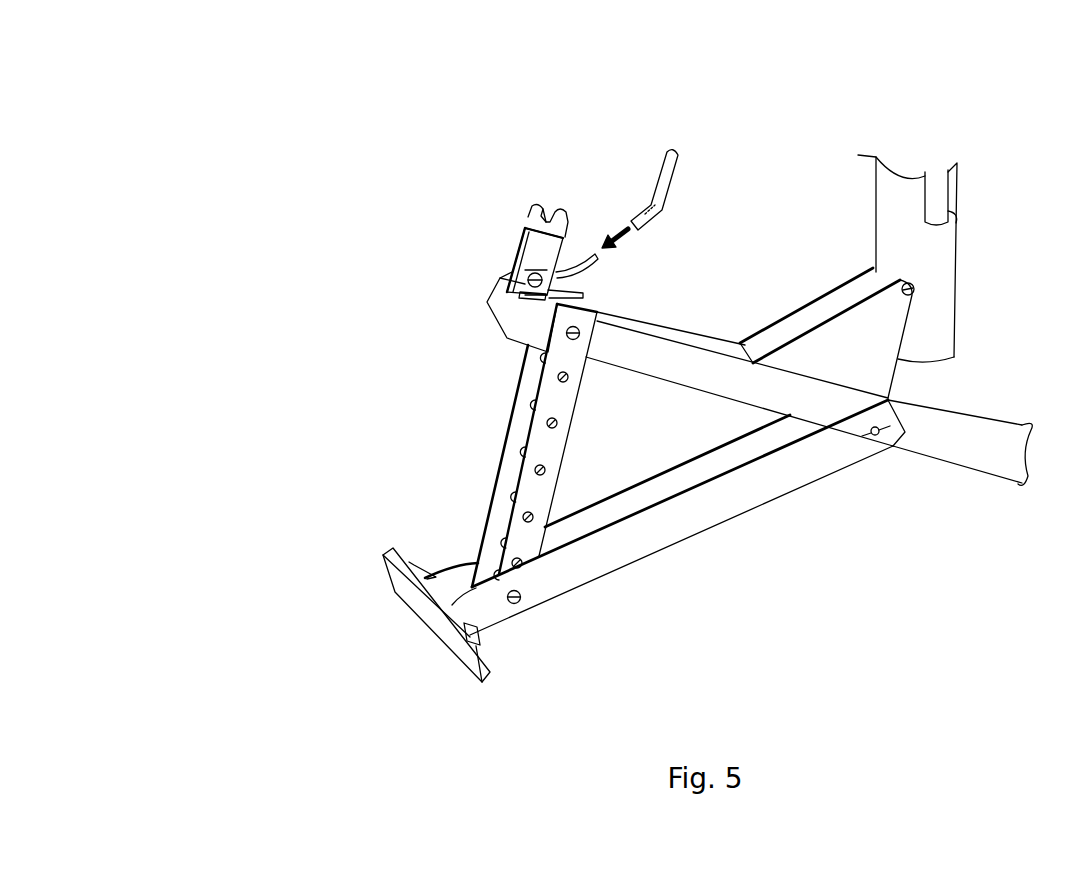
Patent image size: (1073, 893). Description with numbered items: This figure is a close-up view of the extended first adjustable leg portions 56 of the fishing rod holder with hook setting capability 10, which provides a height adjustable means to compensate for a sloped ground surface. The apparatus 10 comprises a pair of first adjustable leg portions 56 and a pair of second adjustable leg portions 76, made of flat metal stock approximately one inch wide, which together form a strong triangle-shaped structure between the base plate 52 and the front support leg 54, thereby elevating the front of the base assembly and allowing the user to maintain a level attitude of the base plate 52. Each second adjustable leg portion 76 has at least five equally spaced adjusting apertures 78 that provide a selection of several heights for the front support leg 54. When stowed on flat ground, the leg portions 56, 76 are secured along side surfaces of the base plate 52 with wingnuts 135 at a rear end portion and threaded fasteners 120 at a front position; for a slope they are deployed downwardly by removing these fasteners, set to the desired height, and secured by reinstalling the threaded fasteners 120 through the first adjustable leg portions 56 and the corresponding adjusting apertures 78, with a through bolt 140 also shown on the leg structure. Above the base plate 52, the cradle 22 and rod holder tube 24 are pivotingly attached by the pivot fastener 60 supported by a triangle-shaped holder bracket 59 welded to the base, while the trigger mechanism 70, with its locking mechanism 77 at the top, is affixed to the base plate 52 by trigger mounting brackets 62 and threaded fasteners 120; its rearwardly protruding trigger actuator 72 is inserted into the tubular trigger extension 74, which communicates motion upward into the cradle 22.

The fishing rod holder with hook setting capability 10 is at (265, 122).
The cradle 22 is at (903, 229).
The rod holder tube 24 is at (940, 190).
The base plate 52 is at (495, 319).
The front support leg 54 is at (437, 603).
The first adjustable leg portion 56 is at (663, 502).
The holder bracket 59 is at (818, 338).
The pivot fastener 60 is at (909, 296).
The trigger mounting bracket 62 is at (520, 296).
The trigger mechanism 70 is at (520, 240).
The trigger actuator 72 is at (582, 256).
The trigger extension 74 is at (661, 191).
The second adjustable leg portion 76 is at (585, 296).
The locking mechanism 77 is at (537, 207).
The adjusting aperture 78 is at (558, 379).
The threaded fastener 120 is at (530, 278).
The wingnut 135 is at (875, 438).
The through bolt 140 is at (578, 340).